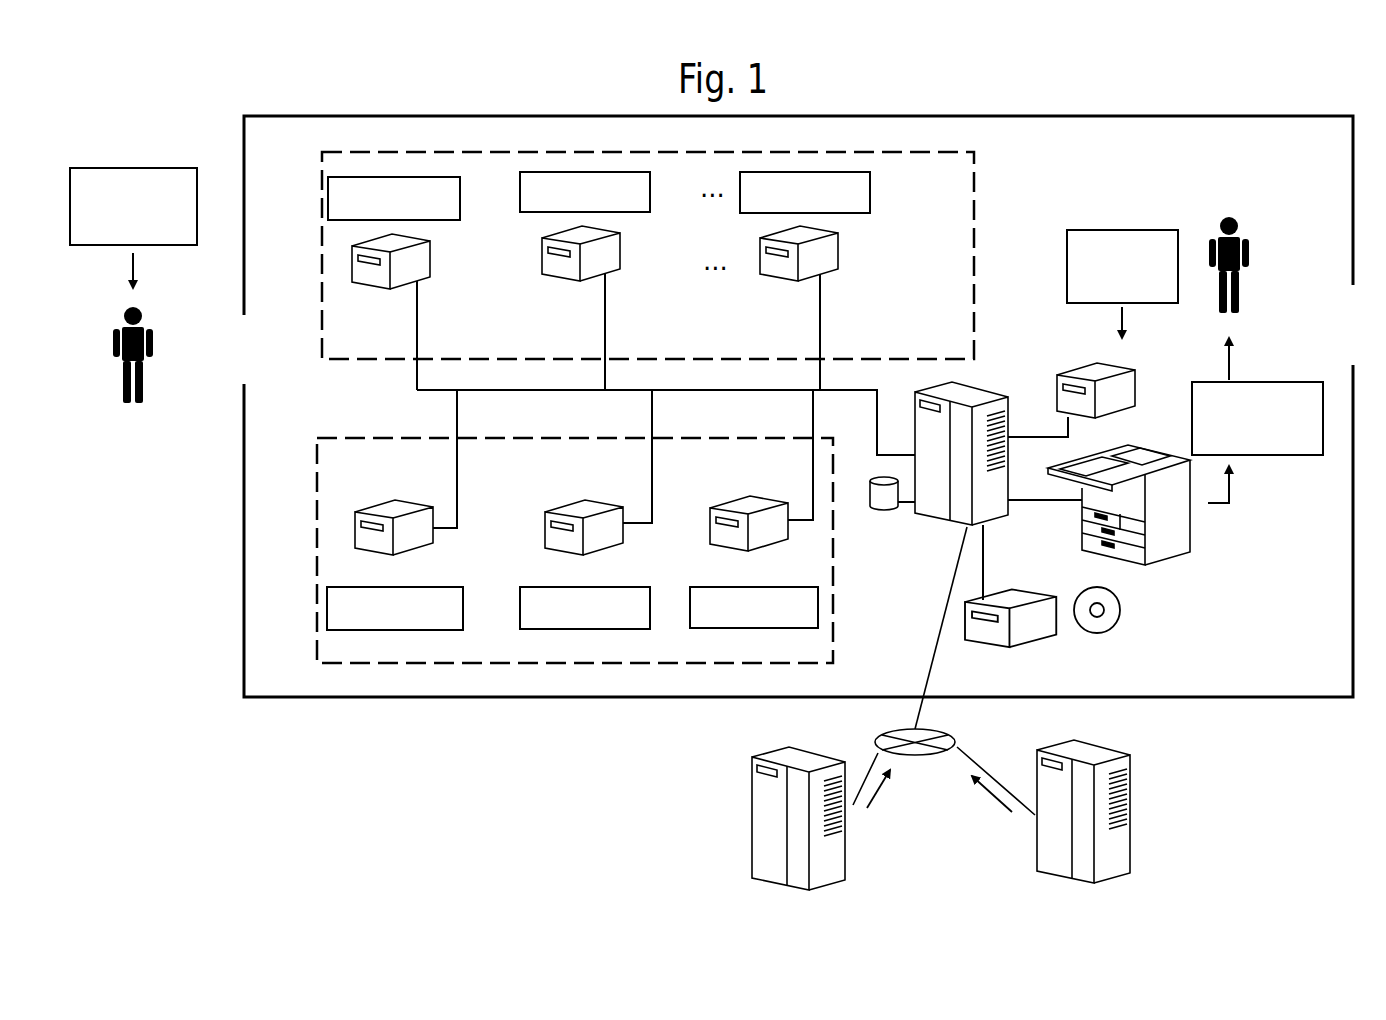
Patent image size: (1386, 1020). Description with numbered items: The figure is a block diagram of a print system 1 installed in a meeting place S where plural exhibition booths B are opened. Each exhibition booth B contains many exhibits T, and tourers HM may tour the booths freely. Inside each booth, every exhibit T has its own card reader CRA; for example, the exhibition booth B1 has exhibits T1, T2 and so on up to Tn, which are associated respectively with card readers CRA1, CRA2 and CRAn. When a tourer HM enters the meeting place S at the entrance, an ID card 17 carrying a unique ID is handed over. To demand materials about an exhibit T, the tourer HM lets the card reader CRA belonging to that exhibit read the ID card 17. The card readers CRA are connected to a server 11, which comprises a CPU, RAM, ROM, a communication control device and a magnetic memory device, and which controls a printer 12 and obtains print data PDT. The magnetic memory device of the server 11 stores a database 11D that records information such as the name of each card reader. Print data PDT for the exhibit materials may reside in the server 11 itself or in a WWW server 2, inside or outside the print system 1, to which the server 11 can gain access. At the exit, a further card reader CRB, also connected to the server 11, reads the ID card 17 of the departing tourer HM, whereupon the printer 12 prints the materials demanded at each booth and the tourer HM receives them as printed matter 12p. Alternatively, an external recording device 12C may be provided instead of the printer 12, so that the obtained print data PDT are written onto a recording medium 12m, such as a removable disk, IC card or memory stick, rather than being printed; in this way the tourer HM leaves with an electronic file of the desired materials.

The print system 1 is at (300, 780).
The WWW server 2 is at (750, 815).
The server 11 is at (978, 387).
The database 11D is at (893, 511).
The printer 12 is at (1193, 530).
The external recording device 12C is at (1042, 588).
The recording medium 12m is at (1120, 612).
The printed matter 12p is at (1192, 382).
The ID card 17 is at (166, 168).
The tourer HM is at (140, 402).
The meeting place S is at (430, 699).
The exhibition booth B is at (835, 527).
The exhibition booth B1 is at (975, 168).
The exhibit T is at (392, 630).
The exhibit T1 is at (460, 195).
The exhibit T2 is at (650, 190).
The exhibit Tn is at (870, 188).
The card reader CRA is at (382, 500).
The card reader CRA1 is at (430, 262).
The card reader CRA2 is at (620, 255).
The card reader CRAn is at (838, 255).
The card reader CRB is at (1075, 362).
The print data PDT is at (873, 793).